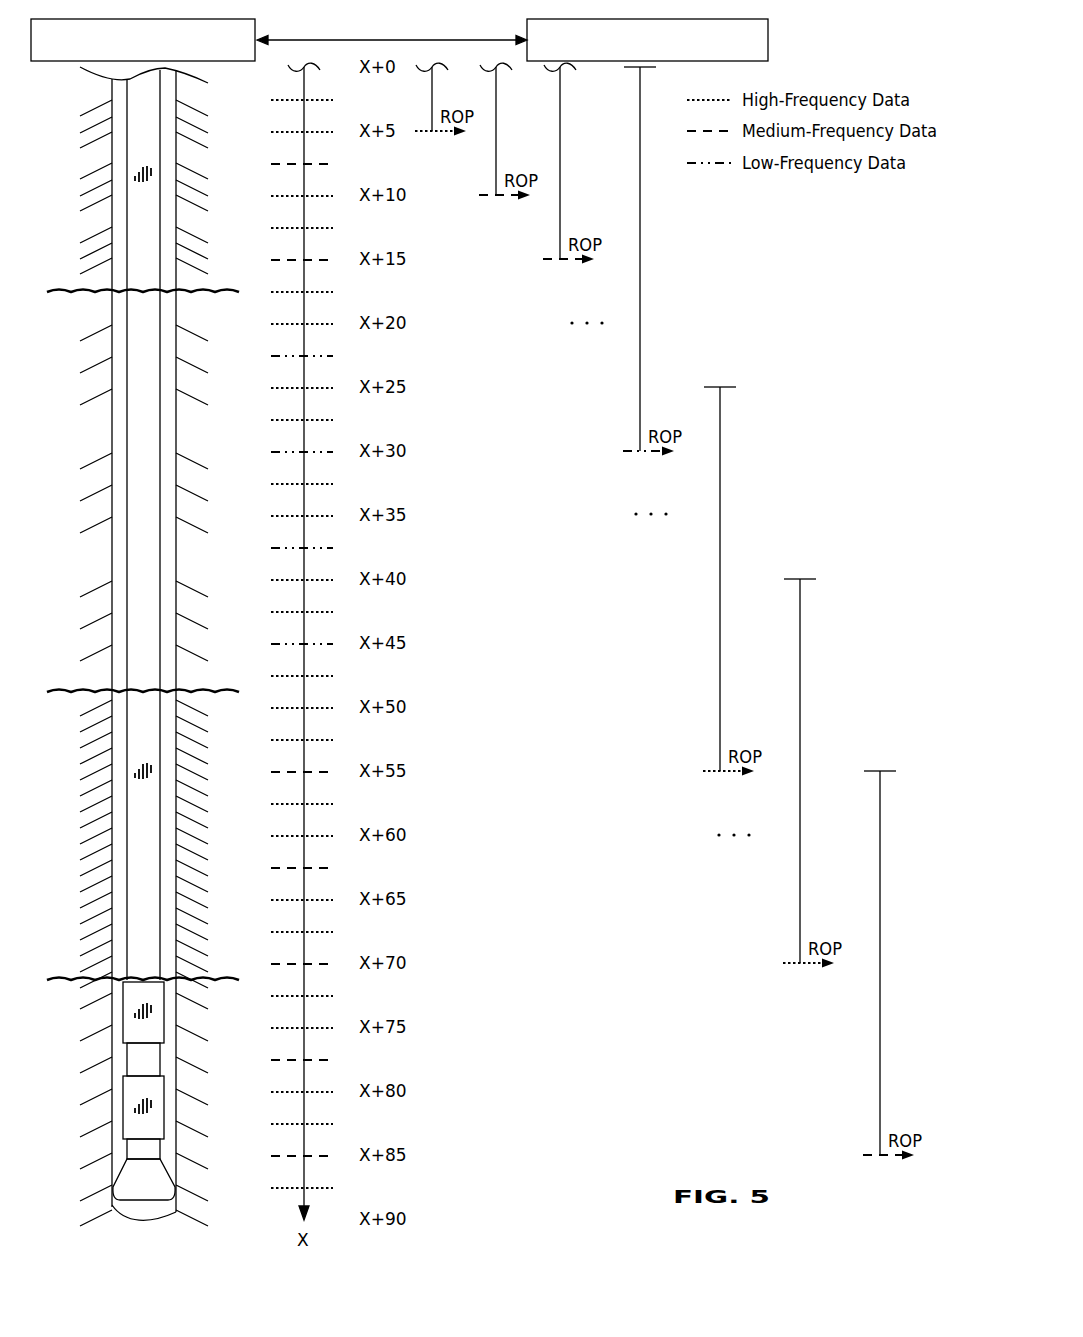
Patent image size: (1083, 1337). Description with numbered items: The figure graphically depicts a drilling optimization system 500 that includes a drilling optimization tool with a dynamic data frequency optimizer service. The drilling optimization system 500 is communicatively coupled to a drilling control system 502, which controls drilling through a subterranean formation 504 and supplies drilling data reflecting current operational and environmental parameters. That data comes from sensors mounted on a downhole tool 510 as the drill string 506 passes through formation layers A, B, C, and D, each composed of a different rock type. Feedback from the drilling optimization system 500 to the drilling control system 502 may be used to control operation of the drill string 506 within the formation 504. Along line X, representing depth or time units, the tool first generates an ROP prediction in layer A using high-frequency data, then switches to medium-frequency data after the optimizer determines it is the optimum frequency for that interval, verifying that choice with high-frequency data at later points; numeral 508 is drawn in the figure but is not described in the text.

The drilling optimization system 500 is at (640, 19).
The drilling control system 502 is at (125, 19).
The subterranean formation 504 is at (48, 237).
The drill string 506 is at (168, 418).
The drill string 508 is at (143, 556).
The downhole tool 510 is at (158, 1062).